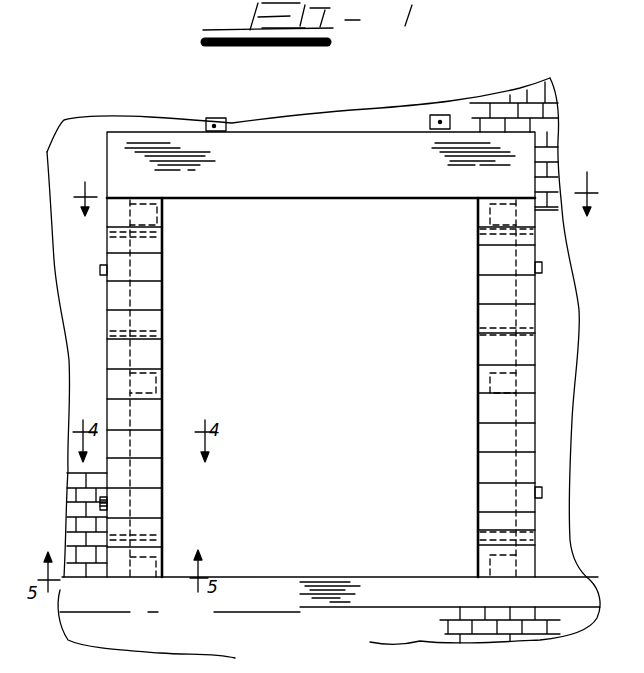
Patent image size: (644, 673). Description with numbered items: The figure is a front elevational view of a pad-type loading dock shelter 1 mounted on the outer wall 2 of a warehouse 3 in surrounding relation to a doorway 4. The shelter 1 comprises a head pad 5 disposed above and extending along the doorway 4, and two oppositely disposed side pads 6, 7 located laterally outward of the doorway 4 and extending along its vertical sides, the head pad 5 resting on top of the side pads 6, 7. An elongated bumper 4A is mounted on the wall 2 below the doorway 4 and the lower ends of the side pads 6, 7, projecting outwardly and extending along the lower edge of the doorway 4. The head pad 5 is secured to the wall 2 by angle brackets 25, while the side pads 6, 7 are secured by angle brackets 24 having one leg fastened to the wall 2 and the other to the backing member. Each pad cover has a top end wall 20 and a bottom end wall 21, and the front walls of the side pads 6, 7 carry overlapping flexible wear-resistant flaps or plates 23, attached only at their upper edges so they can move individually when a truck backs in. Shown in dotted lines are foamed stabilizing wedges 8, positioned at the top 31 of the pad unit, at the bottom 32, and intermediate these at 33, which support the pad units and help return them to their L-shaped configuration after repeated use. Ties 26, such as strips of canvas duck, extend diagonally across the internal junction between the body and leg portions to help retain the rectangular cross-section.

The loading dock shelter 1 is at (580, 306).
The outer wall 2 is at (76, 134).
The warehouse 3 is at (46, 152).
The doorway 4 is at (300, 328).
The elongated bumper 4A is at (283, 604).
The head pad 5 is at (330, 166).
The side pad 6 is at (112, 358).
The side pad 7 is at (528, 350).
The foamed stabilizing wedge 8 is at (160, 226).
The end wall 20 is at (139, 198).
The end wall 21 is at (128, 578).
The flap or plate 23 is at (160, 296).
The angle bracket 24 is at (542, 266).
The angle bracket 25 is at (226, 126).
The tie 26 is at (160, 238).
The top of the pad unit 31 is at (163, 206).
The bottom of the pad unit 32 is at (165, 578).
The intermediate wedge location 33 is at (165, 390).